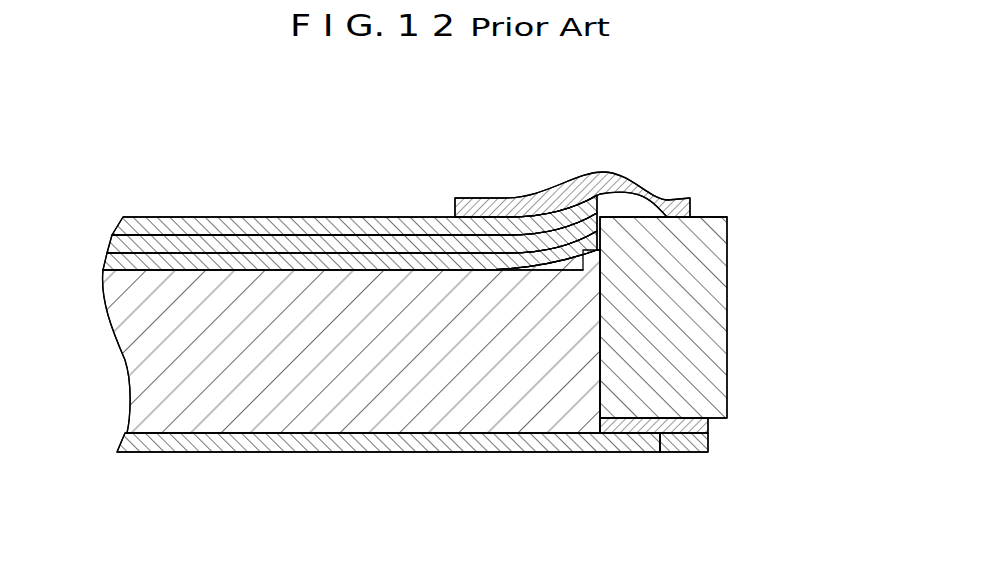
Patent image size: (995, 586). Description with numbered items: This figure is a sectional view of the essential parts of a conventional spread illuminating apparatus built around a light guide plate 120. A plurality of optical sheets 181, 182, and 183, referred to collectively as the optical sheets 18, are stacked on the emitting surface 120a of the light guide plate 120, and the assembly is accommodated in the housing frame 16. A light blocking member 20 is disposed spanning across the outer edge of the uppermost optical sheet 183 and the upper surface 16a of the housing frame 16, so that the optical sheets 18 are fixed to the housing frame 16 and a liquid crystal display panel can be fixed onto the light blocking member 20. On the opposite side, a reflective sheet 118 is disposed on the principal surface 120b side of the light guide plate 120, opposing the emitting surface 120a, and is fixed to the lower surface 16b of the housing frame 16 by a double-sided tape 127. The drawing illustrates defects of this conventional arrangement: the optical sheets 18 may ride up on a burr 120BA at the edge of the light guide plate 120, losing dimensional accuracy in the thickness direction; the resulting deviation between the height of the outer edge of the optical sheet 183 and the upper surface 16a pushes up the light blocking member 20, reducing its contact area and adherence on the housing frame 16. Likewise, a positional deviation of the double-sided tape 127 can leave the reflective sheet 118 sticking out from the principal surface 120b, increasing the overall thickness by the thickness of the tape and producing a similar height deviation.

The housing frame 16 is at (730, 362).
The upper surface of housing frame 16a is at (712, 217).
The lower surface of housing frame 16b is at (717, 423).
The optical sheets 18 is at (350, 167).
The optical sheet 181 is at (172, 252).
The optical sheet 182 is at (212, 235).
The optical sheet 183 is at (107, 125).
The light blocking member 20 is at (601, 172).
The reflective sheet 118 is at (535, 453).
The light guide plate 120 is at (388, 360).
The emitting surface 120a is at (377, 268).
The principal surface 120b is at (220, 449).
The burr 120BA is at (617, 238).
The double-sided tape 127 is at (662, 453).